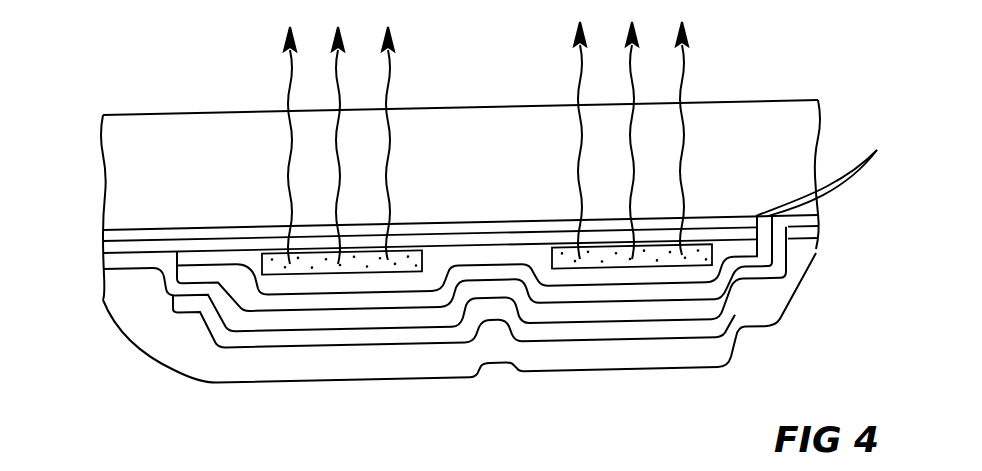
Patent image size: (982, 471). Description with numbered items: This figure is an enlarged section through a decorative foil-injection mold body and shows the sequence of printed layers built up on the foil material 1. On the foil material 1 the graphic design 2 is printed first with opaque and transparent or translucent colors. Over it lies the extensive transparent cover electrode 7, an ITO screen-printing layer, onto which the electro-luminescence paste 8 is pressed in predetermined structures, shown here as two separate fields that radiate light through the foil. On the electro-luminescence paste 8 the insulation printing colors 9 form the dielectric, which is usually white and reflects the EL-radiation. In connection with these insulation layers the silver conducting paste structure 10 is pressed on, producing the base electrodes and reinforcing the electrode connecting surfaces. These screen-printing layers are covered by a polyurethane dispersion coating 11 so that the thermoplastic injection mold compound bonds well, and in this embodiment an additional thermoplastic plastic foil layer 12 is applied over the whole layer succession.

The foil material 1 is at (815, 138).
The graphic design 2 is at (103, 233).
The transparent cover electrode 7 is at (104, 250).
The electro-luminescence paste 8 is at (560, 256).
The insulation printing colors 9 is at (827, 179).
The silver conducting paste structure 10 is at (104, 268).
The polyurethane dispersion coating 11 is at (297, 336).
The thermoplastic plastic foil layer 12 is at (573, 358).